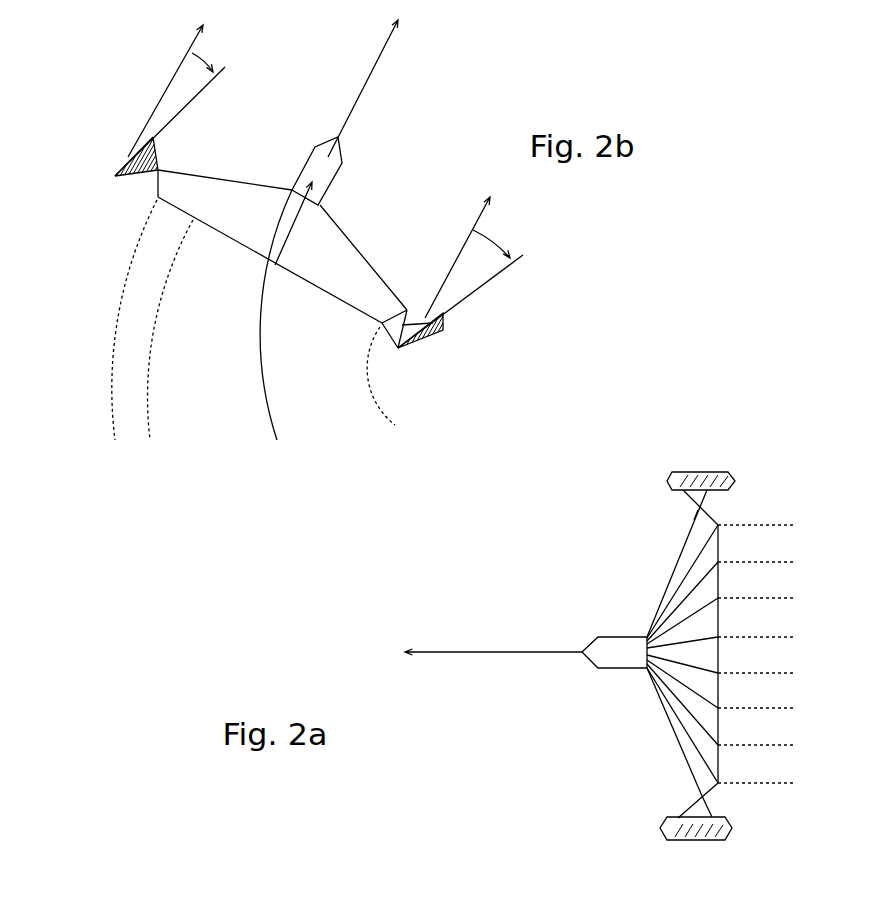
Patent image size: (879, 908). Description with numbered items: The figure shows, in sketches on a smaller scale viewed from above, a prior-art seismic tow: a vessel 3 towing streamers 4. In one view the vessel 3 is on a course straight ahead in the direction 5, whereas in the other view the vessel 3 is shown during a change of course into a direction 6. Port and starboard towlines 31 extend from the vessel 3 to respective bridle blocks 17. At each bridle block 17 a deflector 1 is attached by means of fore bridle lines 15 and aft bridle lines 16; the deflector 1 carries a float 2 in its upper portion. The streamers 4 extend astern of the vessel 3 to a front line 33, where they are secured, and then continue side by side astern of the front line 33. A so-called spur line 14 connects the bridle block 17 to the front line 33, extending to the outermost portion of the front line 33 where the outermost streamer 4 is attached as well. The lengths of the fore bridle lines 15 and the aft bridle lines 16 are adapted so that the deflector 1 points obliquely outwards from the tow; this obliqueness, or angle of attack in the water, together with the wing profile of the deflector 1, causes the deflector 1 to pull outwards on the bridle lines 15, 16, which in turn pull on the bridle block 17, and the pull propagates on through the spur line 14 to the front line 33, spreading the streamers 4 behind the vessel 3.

In FIG. 2b, the deflector 1 is at (276, 222).
In FIG. 2a, the deflector 1 is at (677, 623).
In FIG. 2b, the float 2 is at (117, 174).
In FIG. 2a, the float 2 is at (720, 474).
In FIG. 2b, the vessel 3 is at (316, 160).
In FIG. 2a, the vessel 3 is at (615, 660).
In FIG. 2b, the streamers 4 is at (115, 322).
In FIG. 2a, the streamers 4 is at (790, 525).
In FIG. 2a, the direction 5 is at (470, 655).
In FIG. 2b, the direction 6 is at (367, 82).
In FIG. 2b, the spur line 14 is at (157, 193).
In FIG. 2a, the spur line 14 is at (698, 508).
In FIG. 2b, the fore bridle lines 15 is at (125, 152).
In FIG. 2a, the fore bridle lines 15 is at (692, 507).
In FIG. 2b, the aft bridle lines 16 is at (156, 184).
In FIG. 2a, the aft bridle lines 16 is at (667, 484).
In FIG. 2b, the bridle block 17 is at (158, 170).
In FIG. 2a, the bridle block 17 is at (692, 508).
In FIG. 2b, the towlines 31 is at (273, 185).
In FIG. 2a, the towlines 31 is at (670, 577).
In FIG. 2b, the front line 33 is at (315, 290).
In FIG. 2a, the front line 33 is at (720, 542).